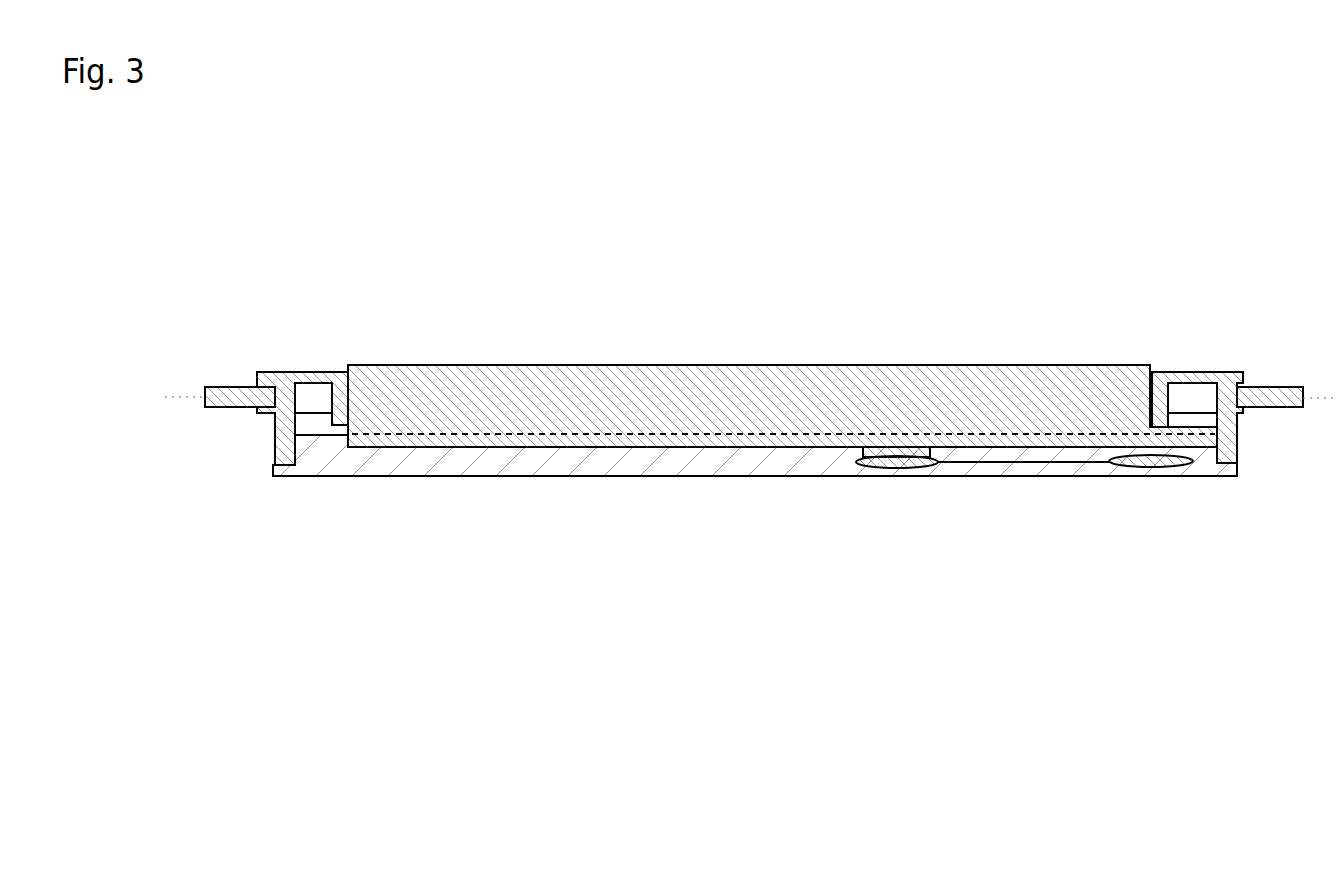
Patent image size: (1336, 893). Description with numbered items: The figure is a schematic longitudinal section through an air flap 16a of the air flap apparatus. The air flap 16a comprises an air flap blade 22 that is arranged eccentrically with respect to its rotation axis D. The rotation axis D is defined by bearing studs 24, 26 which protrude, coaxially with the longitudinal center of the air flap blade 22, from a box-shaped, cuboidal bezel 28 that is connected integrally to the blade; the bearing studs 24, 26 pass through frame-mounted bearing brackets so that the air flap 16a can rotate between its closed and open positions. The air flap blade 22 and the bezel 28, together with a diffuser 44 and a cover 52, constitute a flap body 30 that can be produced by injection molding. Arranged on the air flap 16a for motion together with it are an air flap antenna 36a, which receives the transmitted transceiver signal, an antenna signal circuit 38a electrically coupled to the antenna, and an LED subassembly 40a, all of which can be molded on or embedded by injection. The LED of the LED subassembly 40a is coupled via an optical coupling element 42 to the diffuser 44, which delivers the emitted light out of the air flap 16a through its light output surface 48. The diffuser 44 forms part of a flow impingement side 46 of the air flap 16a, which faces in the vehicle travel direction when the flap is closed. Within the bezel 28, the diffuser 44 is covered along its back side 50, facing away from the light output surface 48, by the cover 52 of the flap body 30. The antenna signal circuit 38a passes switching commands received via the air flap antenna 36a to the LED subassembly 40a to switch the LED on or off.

The air flap 16a is at (243, 277).
The air flap blade 22 is at (310, 396).
The bearing stud 24 is at (222, 386).
The bearing stud 26 is at (1267, 392).
The bezel 28 is at (278, 433).
The flap body 30 is at (823, 485).
The air flap antenna 36a is at (1145, 470).
The antenna signal circuit 38a is at (1168, 463).
The LED subassembly 40a is at (883, 466).
The optical coupling element 42 is at (888, 446).
The diffuser 44 is at (748, 400).
The flow impingement side 46 is at (877, 281).
The light output surface 48 is at (1000, 364).
The back side 50 is at (514, 448).
The cover 52 is at (430, 460).
The rotation axis D is at (176, 394).